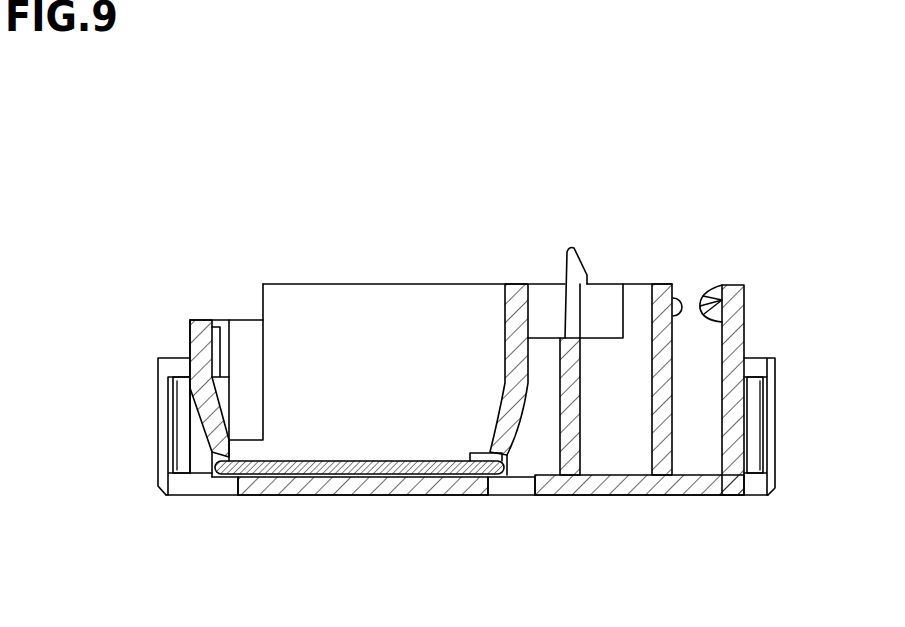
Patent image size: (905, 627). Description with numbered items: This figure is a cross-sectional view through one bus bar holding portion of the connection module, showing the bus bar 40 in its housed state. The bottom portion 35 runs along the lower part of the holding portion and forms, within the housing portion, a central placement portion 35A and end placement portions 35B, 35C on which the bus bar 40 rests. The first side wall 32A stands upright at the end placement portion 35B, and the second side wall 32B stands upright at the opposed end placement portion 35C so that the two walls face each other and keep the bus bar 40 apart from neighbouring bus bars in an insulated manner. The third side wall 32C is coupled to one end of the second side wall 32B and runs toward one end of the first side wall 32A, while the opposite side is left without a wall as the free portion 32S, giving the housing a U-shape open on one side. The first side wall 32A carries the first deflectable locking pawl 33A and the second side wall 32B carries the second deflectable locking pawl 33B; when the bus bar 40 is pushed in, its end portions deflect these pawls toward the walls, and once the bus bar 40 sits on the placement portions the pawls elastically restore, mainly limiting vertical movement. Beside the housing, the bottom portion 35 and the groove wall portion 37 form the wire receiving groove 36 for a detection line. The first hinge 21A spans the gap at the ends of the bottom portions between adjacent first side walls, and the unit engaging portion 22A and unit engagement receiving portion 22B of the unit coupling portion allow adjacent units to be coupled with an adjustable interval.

The first hinge 21A is at (222, 340).
The unit engaging portion 22A is at (750, 426).
The unit engagement receiving portion 22B is at (760, 366).
The first side wall 32A is at (198, 342).
The second side wall 32B is at (516, 320).
The third side wall 32C is at (352, 284).
The free portion 32S is at (407, 327).
The first deflectable locking pawl 33A is at (210, 438).
The second deflectable locking pawl 33B is at (505, 422).
The bottom portion 35 is at (610, 474).
The central placement portion 35A is at (333, 485).
The end placement portion 35B is at (225, 487).
The end placement portion 35C is at (493, 487).
The wire receiving groove 36 is at (702, 461).
The groove wall portion 37 is at (733, 315).
The bus bar 40 is at (377, 470).